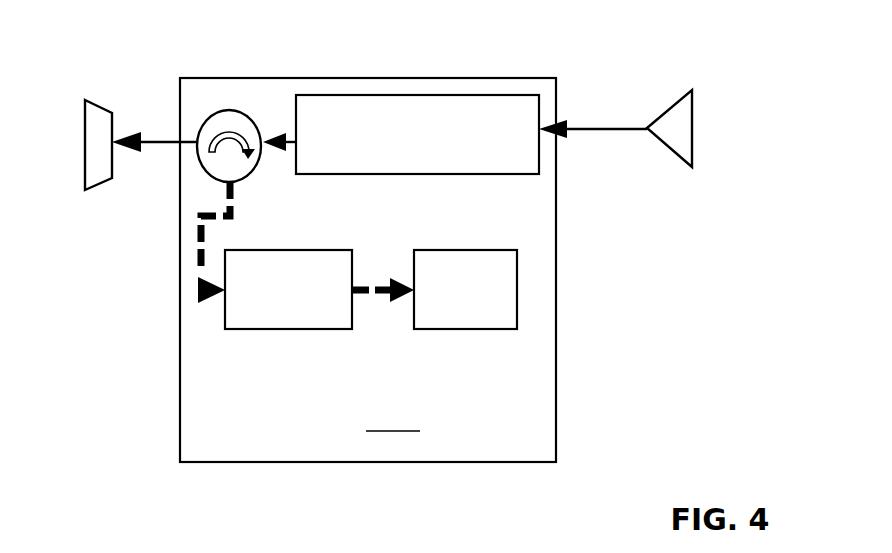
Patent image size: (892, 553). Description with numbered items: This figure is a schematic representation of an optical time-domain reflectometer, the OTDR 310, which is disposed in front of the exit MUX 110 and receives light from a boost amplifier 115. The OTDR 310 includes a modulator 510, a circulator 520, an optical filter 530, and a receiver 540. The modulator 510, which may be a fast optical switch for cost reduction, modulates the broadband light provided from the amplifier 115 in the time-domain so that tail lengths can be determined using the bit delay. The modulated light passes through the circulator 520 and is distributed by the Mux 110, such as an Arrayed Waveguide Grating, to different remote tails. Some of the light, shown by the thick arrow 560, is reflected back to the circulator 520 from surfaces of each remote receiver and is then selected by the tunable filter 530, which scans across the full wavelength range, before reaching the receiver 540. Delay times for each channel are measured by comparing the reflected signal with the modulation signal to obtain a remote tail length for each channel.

The exit MUX 110 is at (100, 183).
The boost amplifier 115 is at (673, 150).
The OTDR 310 is at (558, 406).
The modulator 510 is at (390, 174).
The circulator 520 is at (223, 110).
The tunable filter 530 is at (253, 329).
The receiver 540 is at (430, 329).
The reflected light 560 is at (197, 267).